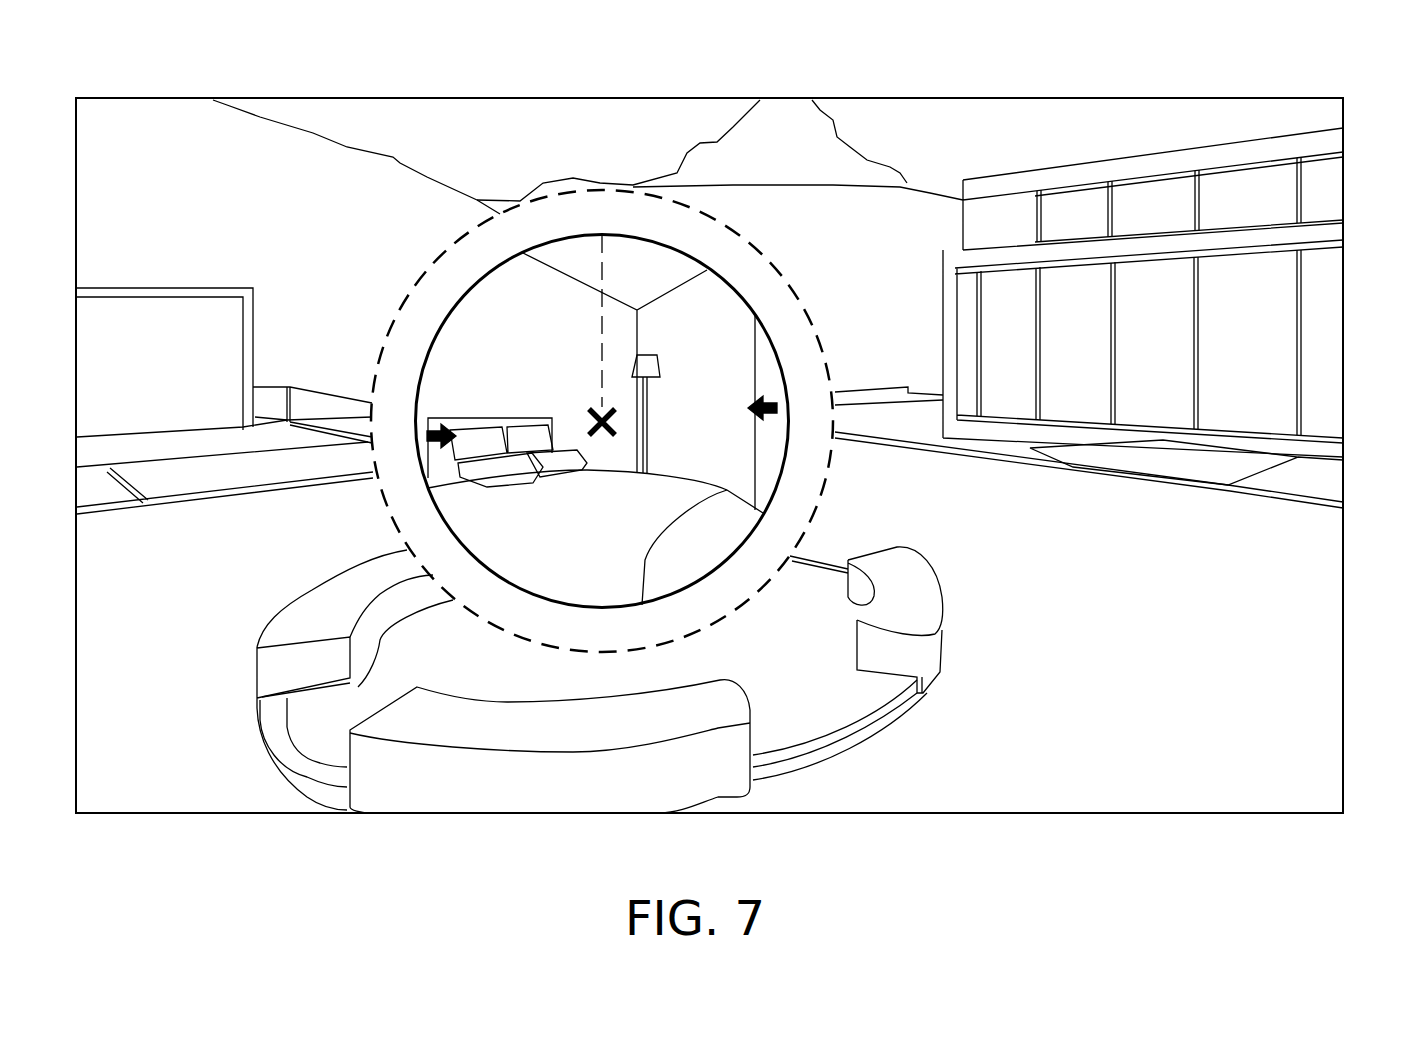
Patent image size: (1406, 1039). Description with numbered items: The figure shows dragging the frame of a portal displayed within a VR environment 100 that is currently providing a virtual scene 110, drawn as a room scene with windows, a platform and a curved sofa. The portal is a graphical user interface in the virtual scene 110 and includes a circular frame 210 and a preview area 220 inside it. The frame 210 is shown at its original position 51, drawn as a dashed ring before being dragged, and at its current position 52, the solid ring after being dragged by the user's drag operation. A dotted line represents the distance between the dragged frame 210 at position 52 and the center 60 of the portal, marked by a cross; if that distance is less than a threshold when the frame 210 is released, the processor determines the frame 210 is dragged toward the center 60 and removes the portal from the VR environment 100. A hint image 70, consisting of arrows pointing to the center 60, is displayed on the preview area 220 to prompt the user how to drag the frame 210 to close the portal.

The VR environment 100 is at (1362, 859).
The virtual scene 110 is at (958, 157).
The frame 210 is at (462, 297).
The preview area 220 is at (528, 320).
The position 51 is at (692, 207).
The position 52 is at (627, 233).
The center 60 is at (598, 423).
The hint image 70 is at (437, 433).